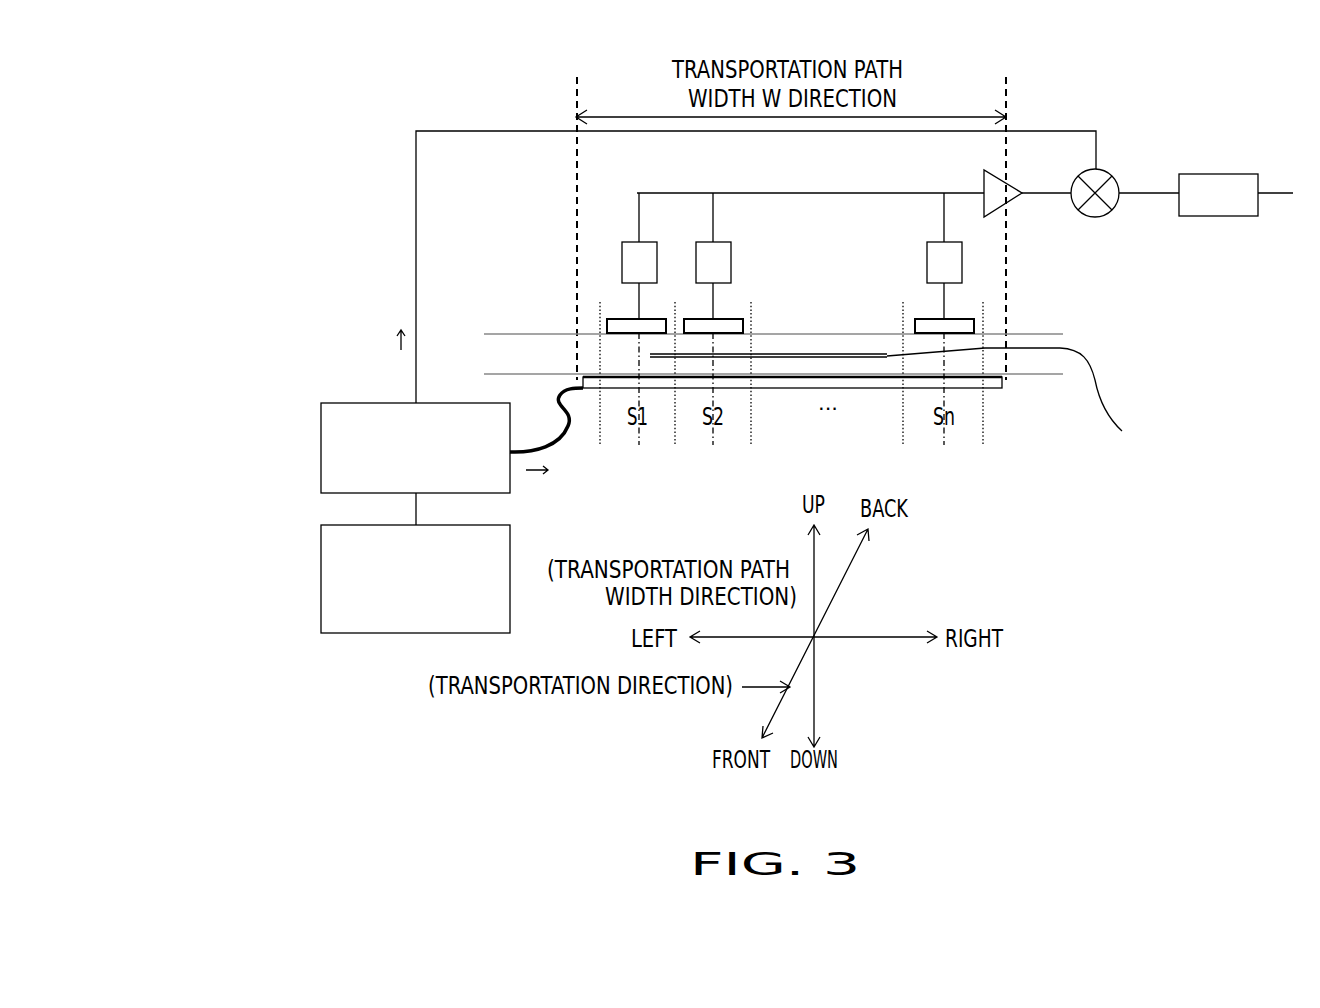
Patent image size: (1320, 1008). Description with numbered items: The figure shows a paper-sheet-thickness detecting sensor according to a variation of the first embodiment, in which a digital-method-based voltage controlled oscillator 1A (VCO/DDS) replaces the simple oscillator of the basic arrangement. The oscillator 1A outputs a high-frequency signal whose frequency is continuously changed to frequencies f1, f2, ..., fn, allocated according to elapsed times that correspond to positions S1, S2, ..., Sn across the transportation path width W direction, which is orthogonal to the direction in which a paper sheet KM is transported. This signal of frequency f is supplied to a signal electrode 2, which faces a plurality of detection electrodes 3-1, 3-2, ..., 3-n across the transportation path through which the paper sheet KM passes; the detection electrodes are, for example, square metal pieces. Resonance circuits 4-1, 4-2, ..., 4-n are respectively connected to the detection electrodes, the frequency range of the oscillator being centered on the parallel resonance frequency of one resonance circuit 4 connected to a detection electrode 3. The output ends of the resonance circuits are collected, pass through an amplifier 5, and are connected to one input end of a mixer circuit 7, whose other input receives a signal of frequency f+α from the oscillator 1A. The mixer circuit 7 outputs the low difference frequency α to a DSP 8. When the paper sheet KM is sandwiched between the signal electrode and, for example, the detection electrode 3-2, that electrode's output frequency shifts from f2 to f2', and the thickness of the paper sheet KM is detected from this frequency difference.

The oscillator 1A is at (321, 457).
The signal electrode 2 is at (1002, 385).
The detection electrode 3 is at (778, 308).
The detection electrode 3-1 is at (615, 319).
The detection electrode 3-2 is at (743, 325).
The detection electrode 3-n is at (974, 325).
The resonance circuit 4 is at (771, 256).
The resonance circuit 4-1 is at (620, 260).
The resonance circuit 4-2 is at (731, 264).
The resonance circuit 4-n is at (962, 265).
The amplifier 5 is at (1021, 185).
The mixer circuit 7 is at (1107, 174).
The DSP 8 is at (1212, 174).
The paper sheet KM is at (974, 396).